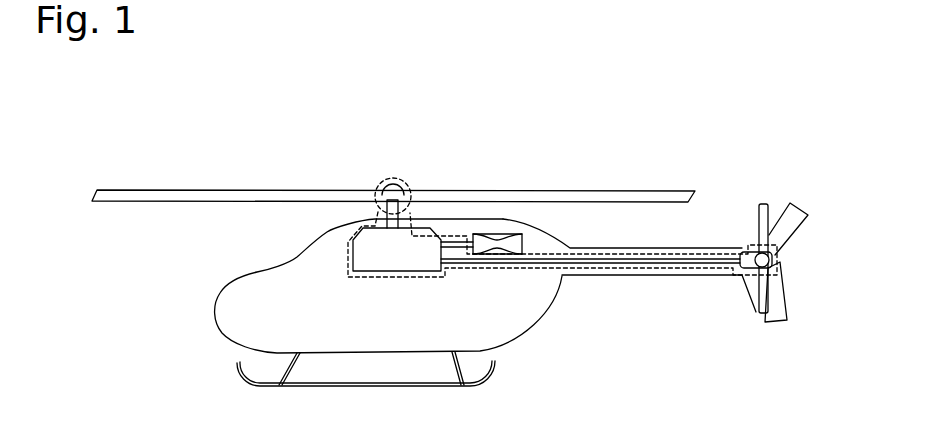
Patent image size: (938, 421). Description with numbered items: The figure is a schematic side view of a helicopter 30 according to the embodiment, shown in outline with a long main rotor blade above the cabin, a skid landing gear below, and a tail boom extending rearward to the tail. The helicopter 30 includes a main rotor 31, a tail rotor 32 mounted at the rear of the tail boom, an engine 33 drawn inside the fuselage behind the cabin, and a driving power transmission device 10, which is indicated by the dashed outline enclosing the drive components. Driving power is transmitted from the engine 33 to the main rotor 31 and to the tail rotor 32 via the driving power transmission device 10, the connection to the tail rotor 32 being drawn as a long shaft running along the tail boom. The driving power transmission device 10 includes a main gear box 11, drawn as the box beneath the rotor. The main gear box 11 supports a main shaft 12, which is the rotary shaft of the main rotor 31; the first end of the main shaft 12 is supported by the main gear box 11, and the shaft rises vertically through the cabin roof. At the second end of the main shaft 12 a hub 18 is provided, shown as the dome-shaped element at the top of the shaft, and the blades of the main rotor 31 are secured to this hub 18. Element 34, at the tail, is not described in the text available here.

The driving power transmission device 10 is at (483, 268).
The main gear box 11 is at (358, 263).
The main shaft 12 is at (385, 212).
The hub 18 is at (394, 187).
The helicopter 30 is at (197, 136).
The main rotor 31 is at (488, 197).
The tail rotor 32 is at (757, 309).
The engine 33 is at (519, 238).
The tail rotor gearbox 34 is at (742, 250).